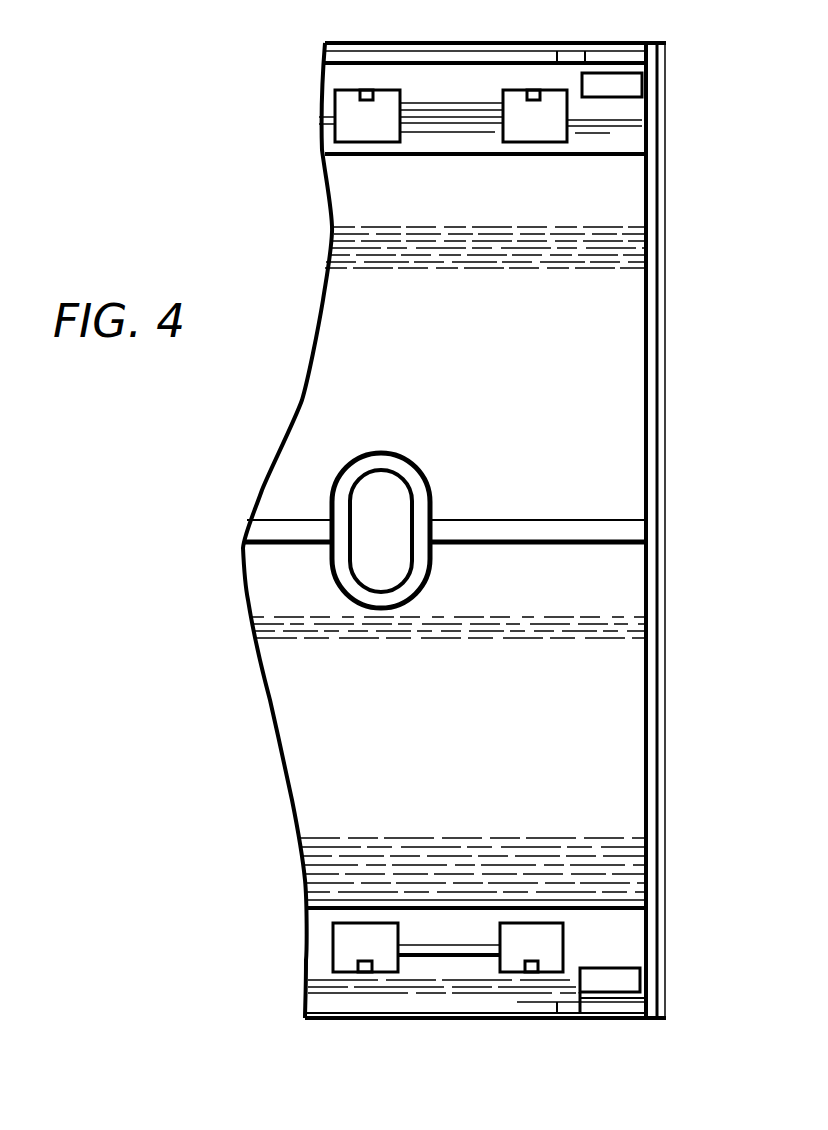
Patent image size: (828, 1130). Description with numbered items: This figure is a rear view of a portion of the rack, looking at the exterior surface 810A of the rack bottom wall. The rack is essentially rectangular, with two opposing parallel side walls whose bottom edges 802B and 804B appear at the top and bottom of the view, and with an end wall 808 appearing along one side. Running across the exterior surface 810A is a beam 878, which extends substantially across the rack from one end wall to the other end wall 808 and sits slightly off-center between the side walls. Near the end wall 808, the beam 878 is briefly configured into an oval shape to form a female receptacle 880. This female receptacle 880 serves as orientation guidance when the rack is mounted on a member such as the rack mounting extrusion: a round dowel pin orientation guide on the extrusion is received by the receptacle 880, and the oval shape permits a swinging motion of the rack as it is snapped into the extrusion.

The bottom edge of side wall 802B is at (520, 58).
The bottom edge of side wall 804B is at (518, 1005).
The end wall 808 is at (667, 736).
The exterior surface of bottom wall 810A is at (360, 713).
The beam 878 is at (523, 497).
The female receptacle 880 is at (392, 498).